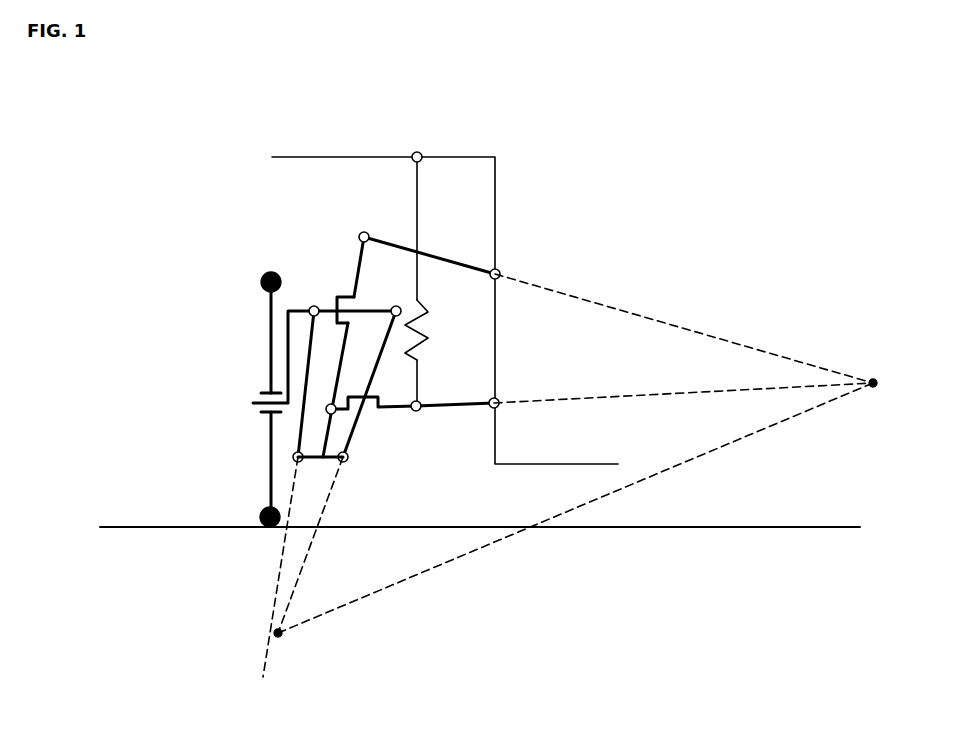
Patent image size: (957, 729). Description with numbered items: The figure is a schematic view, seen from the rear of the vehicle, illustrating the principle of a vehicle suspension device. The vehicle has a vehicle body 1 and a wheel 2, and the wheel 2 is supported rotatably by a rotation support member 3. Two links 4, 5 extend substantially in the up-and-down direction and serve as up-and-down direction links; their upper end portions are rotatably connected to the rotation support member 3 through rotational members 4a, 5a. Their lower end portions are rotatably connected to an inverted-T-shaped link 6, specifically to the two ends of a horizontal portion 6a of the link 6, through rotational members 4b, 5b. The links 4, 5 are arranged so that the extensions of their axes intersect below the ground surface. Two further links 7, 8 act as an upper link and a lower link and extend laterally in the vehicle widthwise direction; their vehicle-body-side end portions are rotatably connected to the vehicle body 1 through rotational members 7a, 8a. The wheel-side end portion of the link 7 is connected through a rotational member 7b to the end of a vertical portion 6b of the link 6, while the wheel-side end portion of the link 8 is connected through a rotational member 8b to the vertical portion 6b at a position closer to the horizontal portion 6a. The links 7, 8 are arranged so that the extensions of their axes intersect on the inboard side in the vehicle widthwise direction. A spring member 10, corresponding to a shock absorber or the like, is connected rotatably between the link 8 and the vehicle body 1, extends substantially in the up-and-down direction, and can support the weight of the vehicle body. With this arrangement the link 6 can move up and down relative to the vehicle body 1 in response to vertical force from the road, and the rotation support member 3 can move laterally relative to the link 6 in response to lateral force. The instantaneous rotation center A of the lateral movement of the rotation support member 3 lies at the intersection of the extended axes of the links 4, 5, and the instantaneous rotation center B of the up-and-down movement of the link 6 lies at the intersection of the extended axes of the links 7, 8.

The vehicle body 1 is at (468, 157).
The wheel 2 is at (270, 480).
The rotation support member 3 is at (324, 308).
The link 4 is at (300, 438).
The rotational member 4a is at (311, 305).
The rotational member 4b is at (306, 462).
The link 5 is at (382, 370).
The rotational member 5a is at (403, 306).
The rotational member 5b is at (350, 458).
The inverted-T-shaped link 6 is at (356, 282).
The horizontal portion 6a is at (312, 462).
The vertical portion 6b is at (356, 293).
The link 7 is at (446, 256).
The rotational member 7a is at (502, 273).
The rotational member 7b is at (368, 229).
The link 8 is at (462, 409).
The rotational member 8a is at (500, 401).
The rotational member 8b is at (338, 413).
The spring member 10 is at (426, 333).
The instantaneous rotation center A is at (275, 633).
The instantaneous rotation center B is at (873, 378).